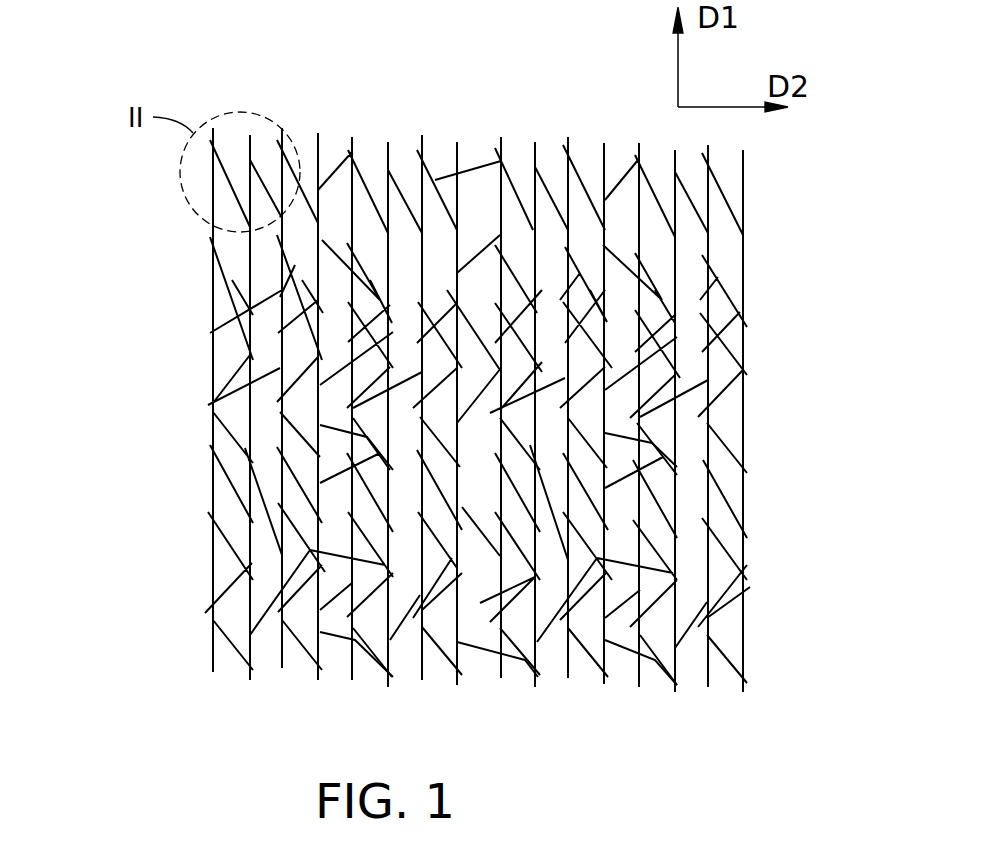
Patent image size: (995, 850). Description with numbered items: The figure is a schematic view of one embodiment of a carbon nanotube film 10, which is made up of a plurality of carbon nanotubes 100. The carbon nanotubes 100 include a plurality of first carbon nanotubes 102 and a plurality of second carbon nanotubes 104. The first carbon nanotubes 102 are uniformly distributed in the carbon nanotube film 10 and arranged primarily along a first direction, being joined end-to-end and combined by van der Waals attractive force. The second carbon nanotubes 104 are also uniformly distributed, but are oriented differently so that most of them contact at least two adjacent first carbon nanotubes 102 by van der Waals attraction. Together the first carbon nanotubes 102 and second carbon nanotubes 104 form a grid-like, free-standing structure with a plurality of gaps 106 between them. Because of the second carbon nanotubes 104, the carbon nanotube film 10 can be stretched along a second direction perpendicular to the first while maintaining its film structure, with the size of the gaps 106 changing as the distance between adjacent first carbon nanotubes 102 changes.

The carbon nanotube film 10 is at (448, 360).
The carbon nanotubes 100 is at (393, 410).
The first carbon nanotubes 102 is at (213, 277).
The second carbon nanotubes 104 is at (233, 198).
The gaps 106 is at (690, 237).